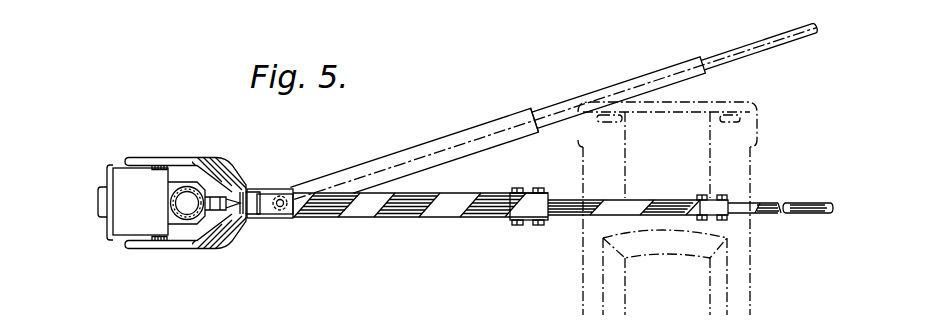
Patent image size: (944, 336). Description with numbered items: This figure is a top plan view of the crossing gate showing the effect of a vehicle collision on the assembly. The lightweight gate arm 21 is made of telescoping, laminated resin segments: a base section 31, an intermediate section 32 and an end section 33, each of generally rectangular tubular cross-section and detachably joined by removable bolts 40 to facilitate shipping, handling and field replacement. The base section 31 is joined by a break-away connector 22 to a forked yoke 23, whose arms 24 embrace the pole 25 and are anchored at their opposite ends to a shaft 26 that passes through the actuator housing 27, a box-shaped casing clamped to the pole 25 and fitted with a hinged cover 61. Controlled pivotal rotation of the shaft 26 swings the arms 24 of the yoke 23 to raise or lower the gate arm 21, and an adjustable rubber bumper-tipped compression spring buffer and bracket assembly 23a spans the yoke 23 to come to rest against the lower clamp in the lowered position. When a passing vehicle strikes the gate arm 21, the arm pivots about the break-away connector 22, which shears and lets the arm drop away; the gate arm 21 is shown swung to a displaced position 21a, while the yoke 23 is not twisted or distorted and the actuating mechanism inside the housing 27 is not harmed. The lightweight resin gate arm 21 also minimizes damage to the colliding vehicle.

The gate arm 21 is at (445, 223).
The operating rod in raised position 21a is at (511, 112).
The break-away connector 22 is at (283, 216).
The forked yoke 23 is at (227, 258).
The compression spring buffer and bracket assembly 23a is at (240, 190).
The arms 24 is at (197, 158).
The pole 25 is at (181, 182).
The shaft 26 is at (138, 152).
The actuator housing 27 is at (117, 163).
The base section 31 is at (478, 193).
The intermediate section 32 is at (652, 73).
The end section 33 is at (742, 45).
The removable bolts 40 is at (516, 225).
The hinged cover 61 is at (103, 228).